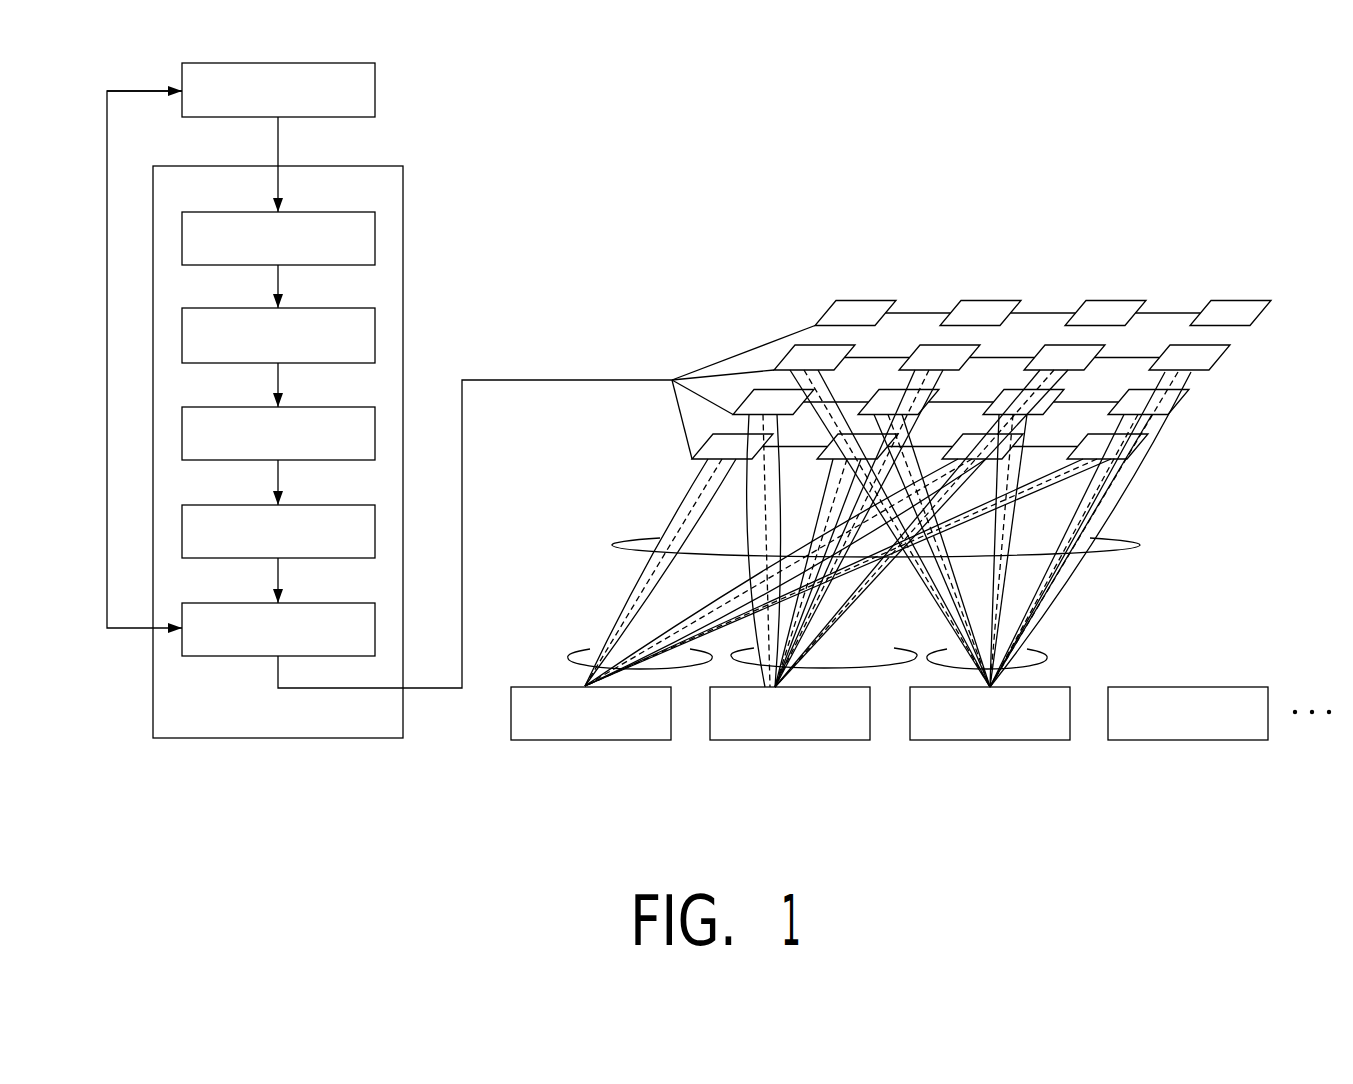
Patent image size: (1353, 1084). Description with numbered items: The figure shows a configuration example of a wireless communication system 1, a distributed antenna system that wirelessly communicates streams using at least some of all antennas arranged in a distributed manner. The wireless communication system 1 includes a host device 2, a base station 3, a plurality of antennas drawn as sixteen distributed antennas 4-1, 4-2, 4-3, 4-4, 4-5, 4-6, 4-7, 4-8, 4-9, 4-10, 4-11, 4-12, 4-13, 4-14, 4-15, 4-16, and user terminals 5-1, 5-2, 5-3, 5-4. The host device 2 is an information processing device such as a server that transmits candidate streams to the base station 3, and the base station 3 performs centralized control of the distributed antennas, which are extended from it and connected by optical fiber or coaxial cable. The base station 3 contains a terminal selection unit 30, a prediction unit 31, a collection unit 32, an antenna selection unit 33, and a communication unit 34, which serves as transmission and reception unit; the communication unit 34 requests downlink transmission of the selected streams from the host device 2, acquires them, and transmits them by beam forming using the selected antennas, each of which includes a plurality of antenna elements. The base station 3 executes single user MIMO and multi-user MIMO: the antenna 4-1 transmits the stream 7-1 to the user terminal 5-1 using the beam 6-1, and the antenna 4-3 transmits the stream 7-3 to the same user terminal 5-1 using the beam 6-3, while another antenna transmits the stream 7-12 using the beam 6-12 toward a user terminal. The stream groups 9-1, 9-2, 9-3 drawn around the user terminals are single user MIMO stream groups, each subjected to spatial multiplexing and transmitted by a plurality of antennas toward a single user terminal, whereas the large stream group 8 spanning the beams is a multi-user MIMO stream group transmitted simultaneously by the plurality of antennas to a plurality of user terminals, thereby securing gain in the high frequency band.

The wireless communication system 1 is at (534, 100).
The host device 2 is at (330, 63).
The base station 3 is at (352, 166).
The terminal selection unit 30 is at (317, 211).
The prediction unit 31 is at (317, 308).
The collection unit 32 is at (317, 407).
The antenna selection unit 33 is at (317, 505).
The communication unit 34 is at (317, 603).
The antenna 4-1 is at (757, 445).
The antenna 4-2 is at (882, 445).
The antenna 4-3 is at (1007, 445).
The antenna 4-4 is at (1132, 445).
The antenna 4-5 is at (772, 403).
The antenna 4-6 is at (897, 403).
The antenna 4-7 is at (1022, 403).
The antenna 4-8 is at (1147, 403).
The antenna 4-9 is at (812, 362).
The antenna 4-10 is at (937, 362).
The antenna 4-11 is at (1062, 362).
The antenna 4-12 is at (1187, 362).
The antenna 4-13 is at (853, 313).
The antenna 4-14 is at (978, 313).
The antenna 4-15 is at (1103, 313).
The antenna 4-16 is at (1228, 313).
The user terminal 5-1 is at (589, 740).
The user terminal 5-2 is at (789, 740).
The user terminal 5-3 is at (989, 740).
The user terminal 5-4 is at (1187, 740).
The beam 6-1 is at (690, 487).
The beam 6-3 is at (697, 603).
The beam 6-12 is at (1153, 452).
The stream 7-1 is at (677, 513).
The stream 7-3 is at (667, 640).
The stream 7-12 is at (1113, 492).
The stream group 8 is at (1122, 550).
The stream group 9-1 is at (687, 672).
The stream group 9-2 is at (890, 672).
The stream group 9-3 is at (1043, 648).